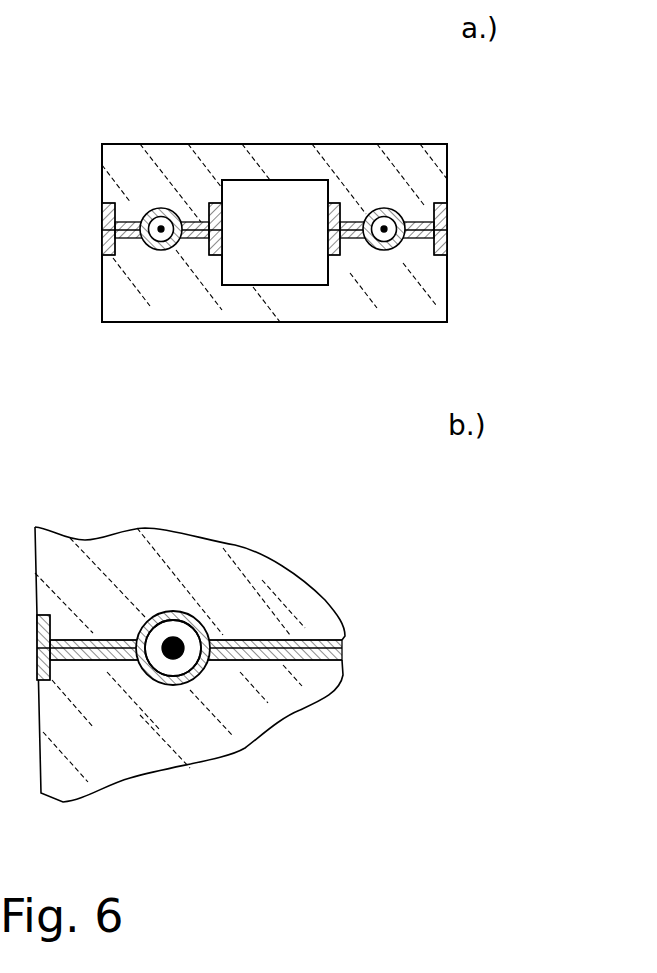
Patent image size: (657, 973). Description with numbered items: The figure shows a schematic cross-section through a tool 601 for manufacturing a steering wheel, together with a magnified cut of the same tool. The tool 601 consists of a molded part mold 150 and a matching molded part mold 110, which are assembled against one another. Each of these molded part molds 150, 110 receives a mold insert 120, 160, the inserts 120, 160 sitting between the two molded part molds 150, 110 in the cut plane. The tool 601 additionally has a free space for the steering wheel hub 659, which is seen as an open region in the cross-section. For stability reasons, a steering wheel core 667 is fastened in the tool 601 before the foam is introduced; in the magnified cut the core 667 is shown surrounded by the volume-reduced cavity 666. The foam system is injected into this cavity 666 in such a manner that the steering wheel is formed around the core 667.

In FIG. 6a, the tool 601 is at (474, 265).
In FIG. 6a, the molded part mold (upper part) 150 is at (188, 170).
In FIG. 6b, the molded part mold (upper part) 150 is at (227, 572).
In FIG. 6a, the molded part mold (lower part) 110 is at (401, 304).
In FIG. 6b, the molded part mold (lower part) 110 is at (203, 730).
In FIG. 6a, the mold insert 120 is at (377, 243).
In FIG. 6b, the mold insert 120 is at (345, 660).
In FIG. 6a, the mold insert 160 is at (398, 215).
In FIG. 6b, the mold insert 160 is at (343, 645).
In FIG. 6a, the free space for the steering wheel hub 659 is at (283, 205).
In FIG. 6b, the volume-reduced cavity 666 is at (172, 628).
In FIG. 6b, the steering wheel core 667 is at (183, 653).